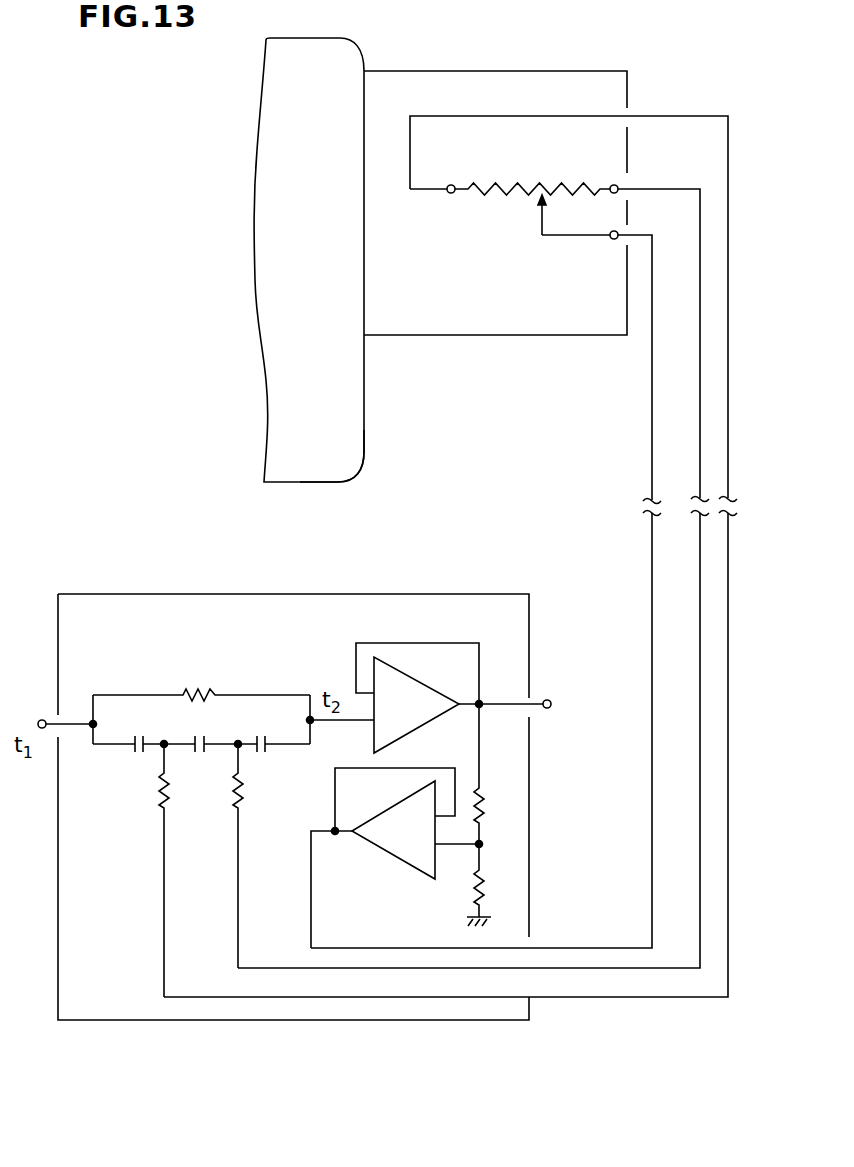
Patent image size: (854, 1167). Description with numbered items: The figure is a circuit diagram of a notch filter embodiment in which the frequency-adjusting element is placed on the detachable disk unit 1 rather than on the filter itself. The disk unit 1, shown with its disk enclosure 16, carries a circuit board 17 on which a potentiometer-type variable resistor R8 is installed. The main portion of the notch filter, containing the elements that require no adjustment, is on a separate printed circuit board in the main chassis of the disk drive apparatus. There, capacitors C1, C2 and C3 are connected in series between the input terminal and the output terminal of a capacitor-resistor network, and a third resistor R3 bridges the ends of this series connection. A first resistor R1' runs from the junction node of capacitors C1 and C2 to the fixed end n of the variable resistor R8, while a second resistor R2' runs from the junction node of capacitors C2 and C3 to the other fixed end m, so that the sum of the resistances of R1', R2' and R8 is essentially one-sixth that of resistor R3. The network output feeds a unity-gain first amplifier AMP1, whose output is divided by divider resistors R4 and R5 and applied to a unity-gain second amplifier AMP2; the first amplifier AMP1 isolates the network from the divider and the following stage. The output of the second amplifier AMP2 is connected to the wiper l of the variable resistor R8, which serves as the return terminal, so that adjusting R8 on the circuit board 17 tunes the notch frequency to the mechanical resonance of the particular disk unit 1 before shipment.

The disk unit 1 is at (354, 45).
The disk enclosure 16 is at (356, 450).
The circuit board 17 is at (548, 322).
The potentiometer-type variable resistor R8 is at (446, 556).
The third resistor R3 is at (201, 681).
The divider resistor R4 is at (495, 776).
The divider resistor R5 is at (491, 885).
The first resistor R1' is at (182, 870).
The second resistor R2' is at (259, 856).
The capacitor C1 is at (128, 732).
The capacitor C2 is at (201, 732).
The capacitor C3 is at (274, 732).
The first amplifier AMP1 is at (453, 698).
The second amplifier AMP2 is at (395, 858).